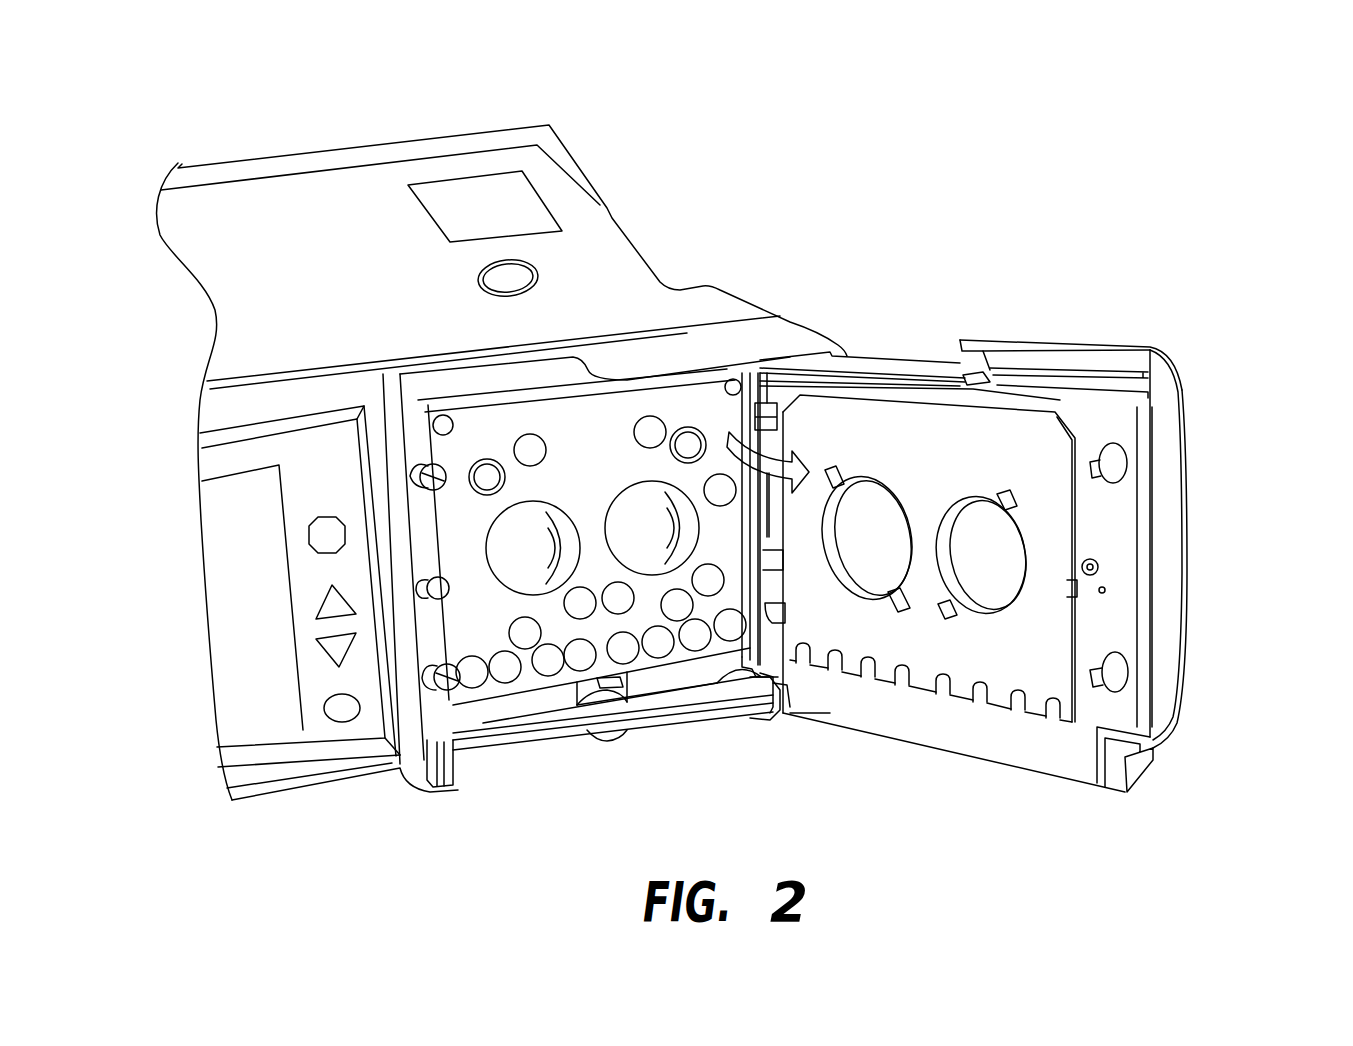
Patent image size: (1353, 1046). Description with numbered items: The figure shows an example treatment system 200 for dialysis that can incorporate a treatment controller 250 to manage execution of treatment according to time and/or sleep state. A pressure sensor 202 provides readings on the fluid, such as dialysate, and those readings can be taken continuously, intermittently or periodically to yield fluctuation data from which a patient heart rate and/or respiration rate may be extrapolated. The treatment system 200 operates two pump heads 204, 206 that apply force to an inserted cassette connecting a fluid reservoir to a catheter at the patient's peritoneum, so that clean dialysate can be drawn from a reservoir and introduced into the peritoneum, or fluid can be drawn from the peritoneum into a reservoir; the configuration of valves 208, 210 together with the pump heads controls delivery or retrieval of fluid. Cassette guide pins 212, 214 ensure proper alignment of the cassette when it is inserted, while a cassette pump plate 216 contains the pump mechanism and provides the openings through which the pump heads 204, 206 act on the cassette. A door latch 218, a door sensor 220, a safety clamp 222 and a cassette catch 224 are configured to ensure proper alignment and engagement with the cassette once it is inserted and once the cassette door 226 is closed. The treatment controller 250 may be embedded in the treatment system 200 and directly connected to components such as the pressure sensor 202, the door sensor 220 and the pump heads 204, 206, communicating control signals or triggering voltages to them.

The treatment system 200 is at (884, 205).
The pressure sensor 202 is at (490, 460).
The pump head 204 is at (533, 548).
The pump head 206 is at (652, 528).
The valve 208 is at (524, 650).
The valve 210 is at (551, 678).
The cassette guide pin 212 is at (440, 420).
The cassette guide pin 214 is at (727, 380).
The cassette pump plate 216 is at (562, 427).
The door latch 218 is at (1070, 345).
The door sensor 220 is at (430, 588).
The safety clamp 222 is at (455, 697).
The cassette catch 224 is at (627, 703).
The cassette door 226 is at (1192, 503).
The treatment controller 250 is at (448, 178).